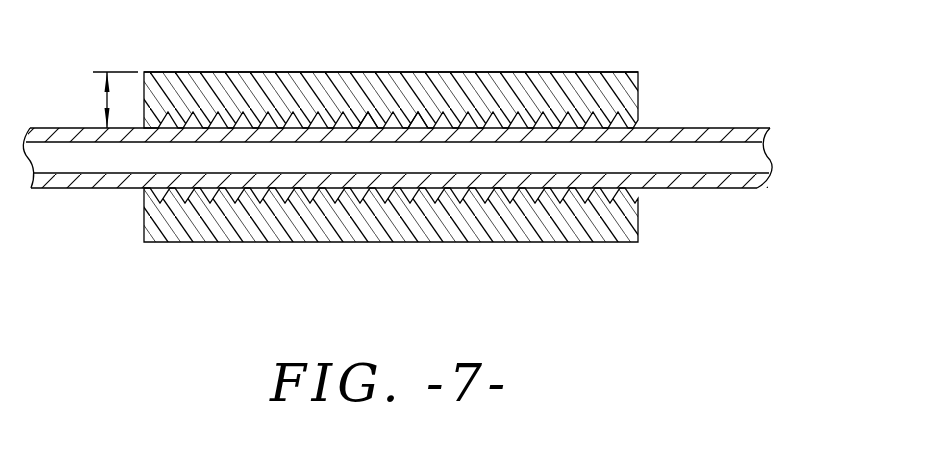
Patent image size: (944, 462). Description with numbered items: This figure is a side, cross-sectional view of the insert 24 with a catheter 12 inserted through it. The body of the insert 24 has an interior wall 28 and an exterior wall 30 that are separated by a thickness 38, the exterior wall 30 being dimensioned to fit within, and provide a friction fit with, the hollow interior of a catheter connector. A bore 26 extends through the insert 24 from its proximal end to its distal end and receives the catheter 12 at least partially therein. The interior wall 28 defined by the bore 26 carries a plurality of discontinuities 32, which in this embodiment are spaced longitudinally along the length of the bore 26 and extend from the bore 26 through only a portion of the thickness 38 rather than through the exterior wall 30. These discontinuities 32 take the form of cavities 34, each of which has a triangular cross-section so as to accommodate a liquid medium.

The catheter 12 is at (704, 116).
The insert 24 is at (561, 58).
The bore 26 is at (277, 158).
The interior wall 28 is at (247, 188).
The exterior wall 30 is at (465, 72).
The discontinuity 32 is at (372, 118).
The cavity 34 is at (413, 118).
The thickness 38 is at (105, 100).